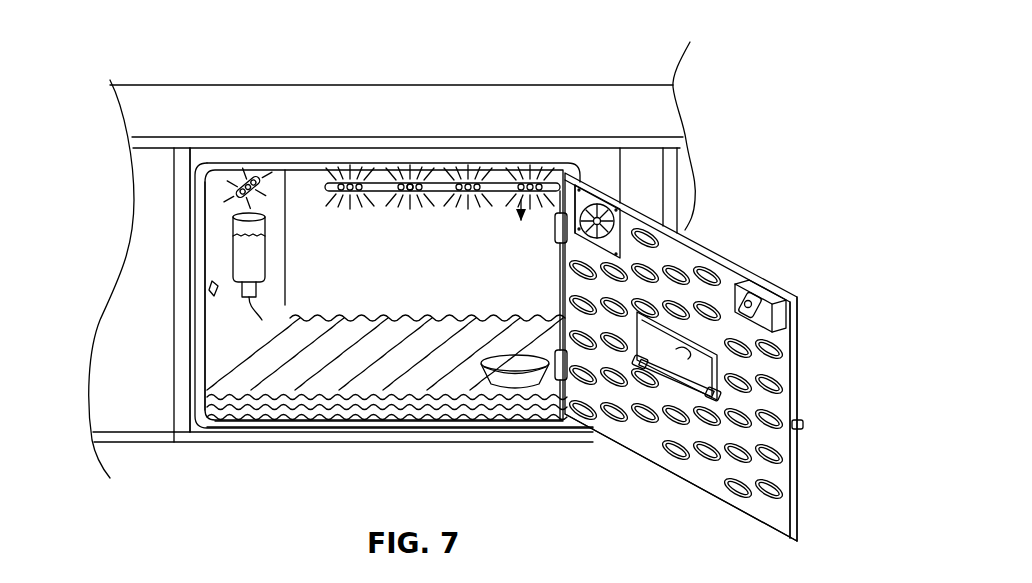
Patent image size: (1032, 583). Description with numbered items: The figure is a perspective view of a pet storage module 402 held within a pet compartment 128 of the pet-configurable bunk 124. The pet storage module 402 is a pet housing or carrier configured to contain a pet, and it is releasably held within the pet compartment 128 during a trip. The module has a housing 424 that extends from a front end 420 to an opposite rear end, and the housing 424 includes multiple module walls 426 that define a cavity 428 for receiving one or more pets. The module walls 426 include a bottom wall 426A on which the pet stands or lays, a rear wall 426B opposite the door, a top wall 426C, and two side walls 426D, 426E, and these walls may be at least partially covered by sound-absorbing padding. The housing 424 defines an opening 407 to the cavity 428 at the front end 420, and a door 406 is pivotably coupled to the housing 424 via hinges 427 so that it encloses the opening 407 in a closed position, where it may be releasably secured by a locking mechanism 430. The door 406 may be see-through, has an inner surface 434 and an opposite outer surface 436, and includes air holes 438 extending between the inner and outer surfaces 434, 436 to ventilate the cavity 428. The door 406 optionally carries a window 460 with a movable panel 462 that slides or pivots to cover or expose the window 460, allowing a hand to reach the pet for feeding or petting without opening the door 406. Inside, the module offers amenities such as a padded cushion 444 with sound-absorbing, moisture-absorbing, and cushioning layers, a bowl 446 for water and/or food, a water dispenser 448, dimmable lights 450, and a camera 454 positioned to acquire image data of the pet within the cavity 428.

The pet-configurable bunk 124 is at (195, 118).
The pet storage module 402 is at (233, 150).
The housing 424 is at (328, 180).
The top wall 426C is at (397, 180).
The dimmable lights 450 is at (233, 186).
The cavity 428 is at (530, 180).
The side wall 426E is at (600, 200).
The front end 420 is at (189, 372).
The water dispenser 448 is at (230, 228).
The locking mechanism 430 is at (209, 281).
The module walls 426 is at (200, 322).
The rear wall 426B is at (300, 308).
The opening 407 is at (214, 347).
The side wall 426D is at (198, 386).
The pet compartment 128 is at (189, 415).
The bottom wall 426A is at (262, 430).
The padded cushion 444 is at (394, 398).
The bowl 446 is at (505, 380).
The hinges 427 is at (592, 430).
The window 460 is at (667, 315).
The movable panel 462 is at (696, 358).
The camera 454 is at (797, 334).
The door 406 is at (799, 355).
The outer surface 436 is at (800, 447).
The air holes 438 is at (785, 469).
The inner surface 434 is at (747, 503).